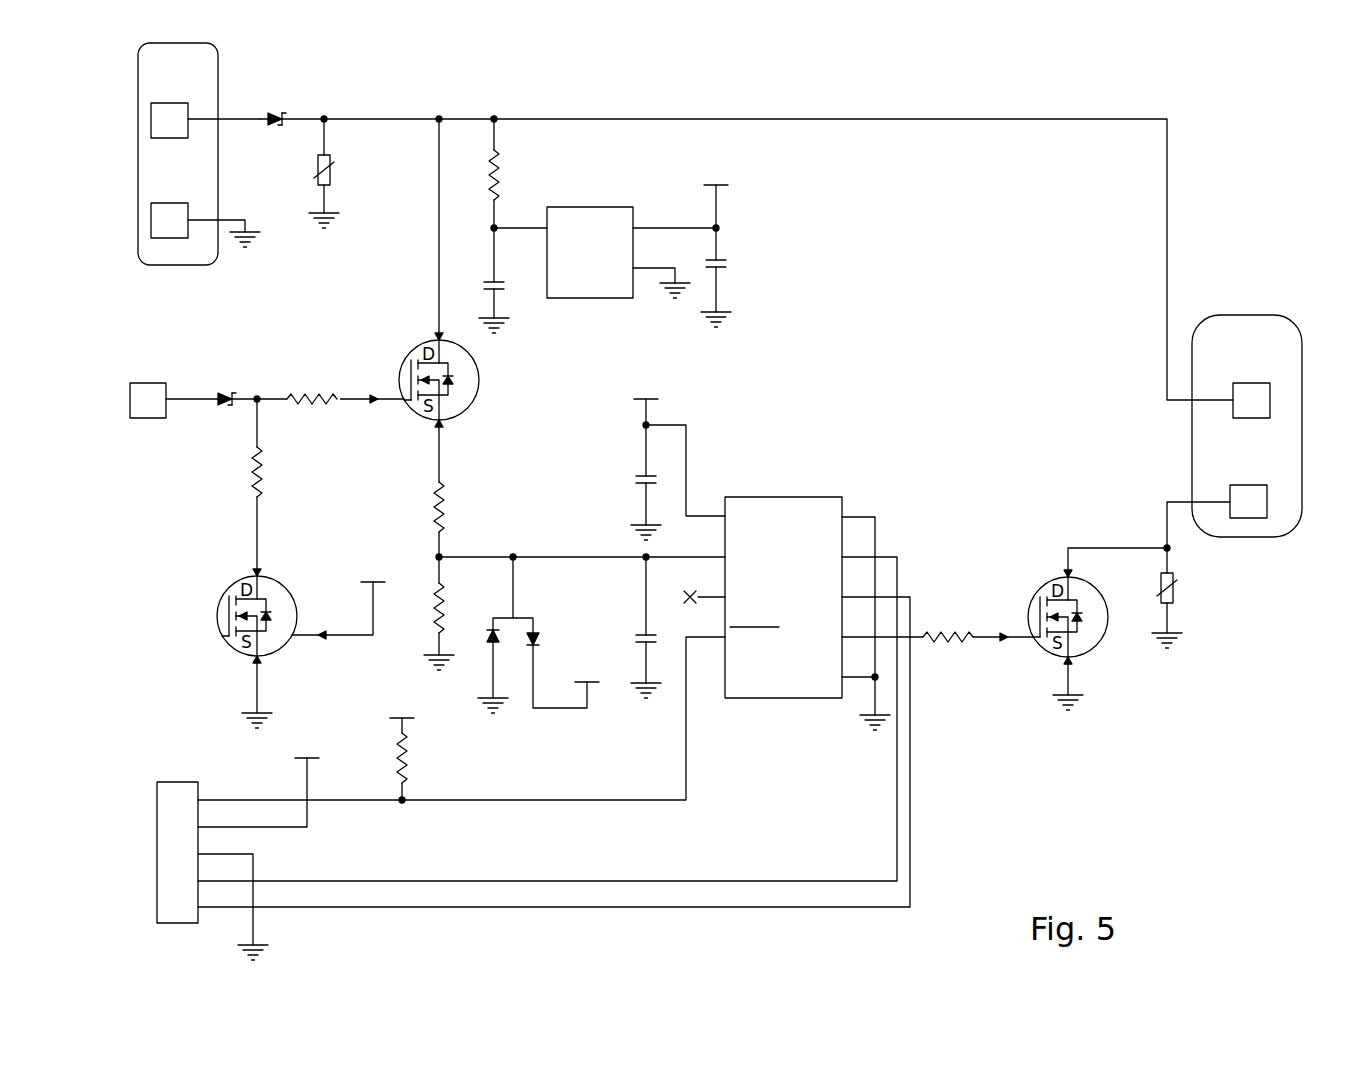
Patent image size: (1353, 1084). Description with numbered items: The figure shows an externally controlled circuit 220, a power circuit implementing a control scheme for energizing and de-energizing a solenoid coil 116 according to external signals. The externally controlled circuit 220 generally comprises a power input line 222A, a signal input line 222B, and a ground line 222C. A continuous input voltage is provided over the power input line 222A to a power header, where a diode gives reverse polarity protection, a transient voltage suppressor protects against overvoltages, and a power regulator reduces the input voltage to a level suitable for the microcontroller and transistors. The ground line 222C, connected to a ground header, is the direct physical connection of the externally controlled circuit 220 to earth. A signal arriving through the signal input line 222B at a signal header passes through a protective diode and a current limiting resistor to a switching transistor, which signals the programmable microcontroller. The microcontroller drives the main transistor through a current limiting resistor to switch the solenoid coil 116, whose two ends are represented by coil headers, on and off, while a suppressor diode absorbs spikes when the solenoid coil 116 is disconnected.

The externally controlled circuit 220 is at (1097, 95).
The power input line 222A is at (242, 119).
The signal input line 222B is at (198, 399).
The ground line 222C is at (225, 220).
The solenoid coil 116 is at (1242, 315).